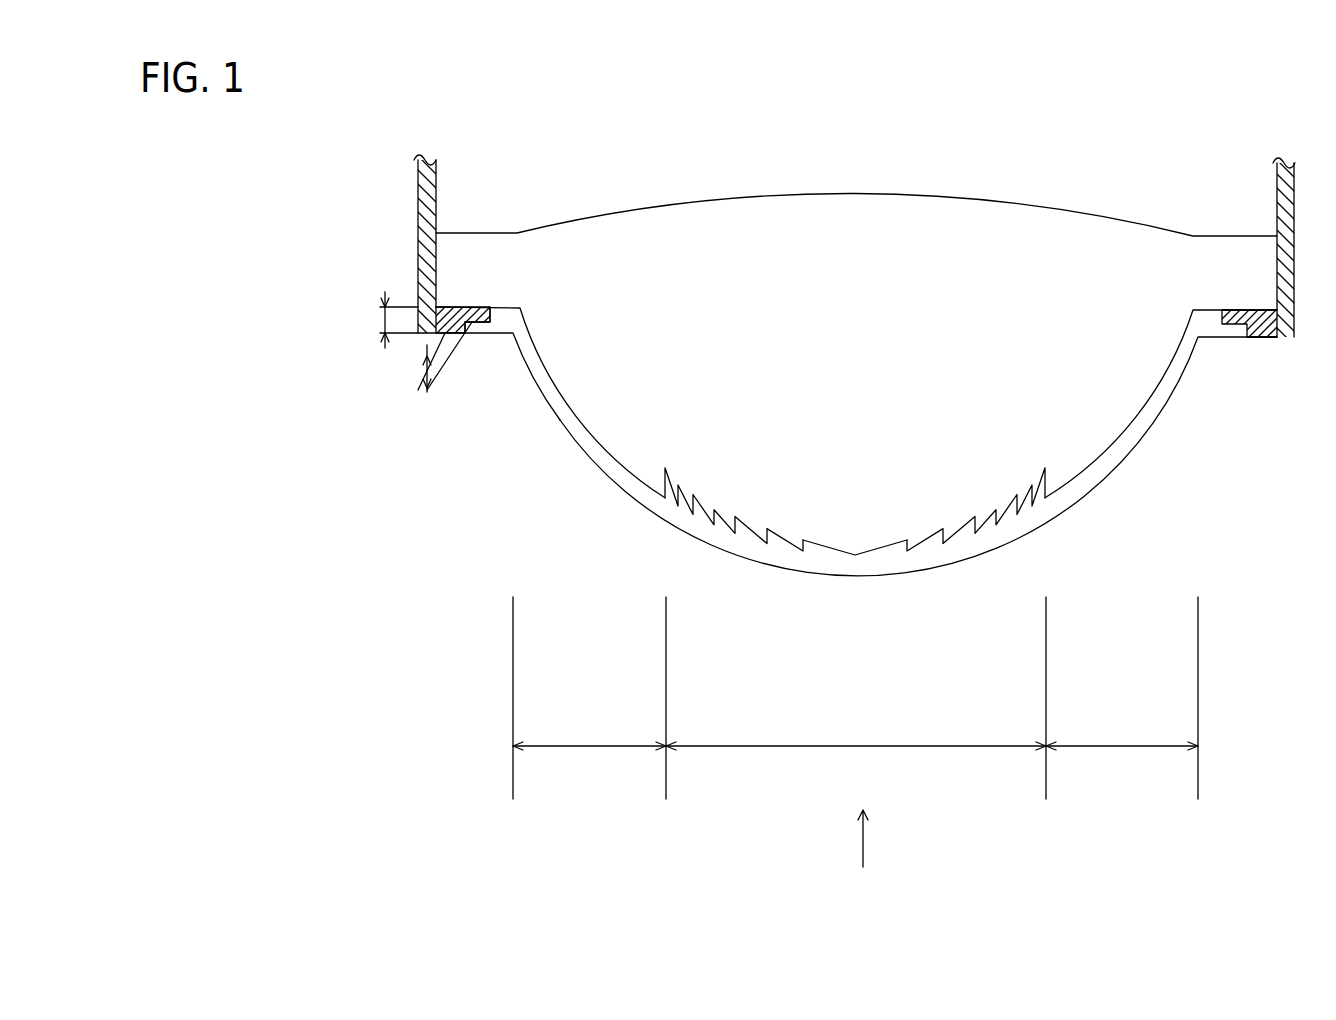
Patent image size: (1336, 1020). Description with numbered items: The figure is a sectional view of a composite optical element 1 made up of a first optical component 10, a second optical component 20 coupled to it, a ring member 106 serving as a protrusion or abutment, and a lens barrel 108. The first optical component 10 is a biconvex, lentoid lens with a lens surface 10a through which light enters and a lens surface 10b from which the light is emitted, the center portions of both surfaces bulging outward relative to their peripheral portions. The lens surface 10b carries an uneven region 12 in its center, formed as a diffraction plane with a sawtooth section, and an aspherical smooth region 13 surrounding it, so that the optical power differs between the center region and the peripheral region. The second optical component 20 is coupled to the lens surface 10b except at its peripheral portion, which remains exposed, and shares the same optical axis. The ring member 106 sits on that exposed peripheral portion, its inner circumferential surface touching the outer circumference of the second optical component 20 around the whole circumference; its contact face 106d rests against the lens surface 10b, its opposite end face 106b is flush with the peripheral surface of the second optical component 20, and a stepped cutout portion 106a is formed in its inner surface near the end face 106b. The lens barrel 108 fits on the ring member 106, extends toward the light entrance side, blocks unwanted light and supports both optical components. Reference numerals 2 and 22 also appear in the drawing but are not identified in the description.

The composite optical element 1 is at (531, 120).
The light guide unit 2 is at (487, 558).
The first optical component 10 is at (856, 386).
The lens surface 10a is at (665, 203).
The lens surface 10b is at (838, 552).
The uneven region 12 is at (928, 533).
The smooth region 13 is at (1110, 440).
The second optical component 20 is at (618, 500).
The inclined portion 22 is at (542, 403).
The ring member 106 is at (453, 307).
The cutout portion 106a is at (472, 334).
The end face 106b is at (1265, 338).
The contact face 106d is at (1263, 308).
The lens barrel 108 is at (418, 205).